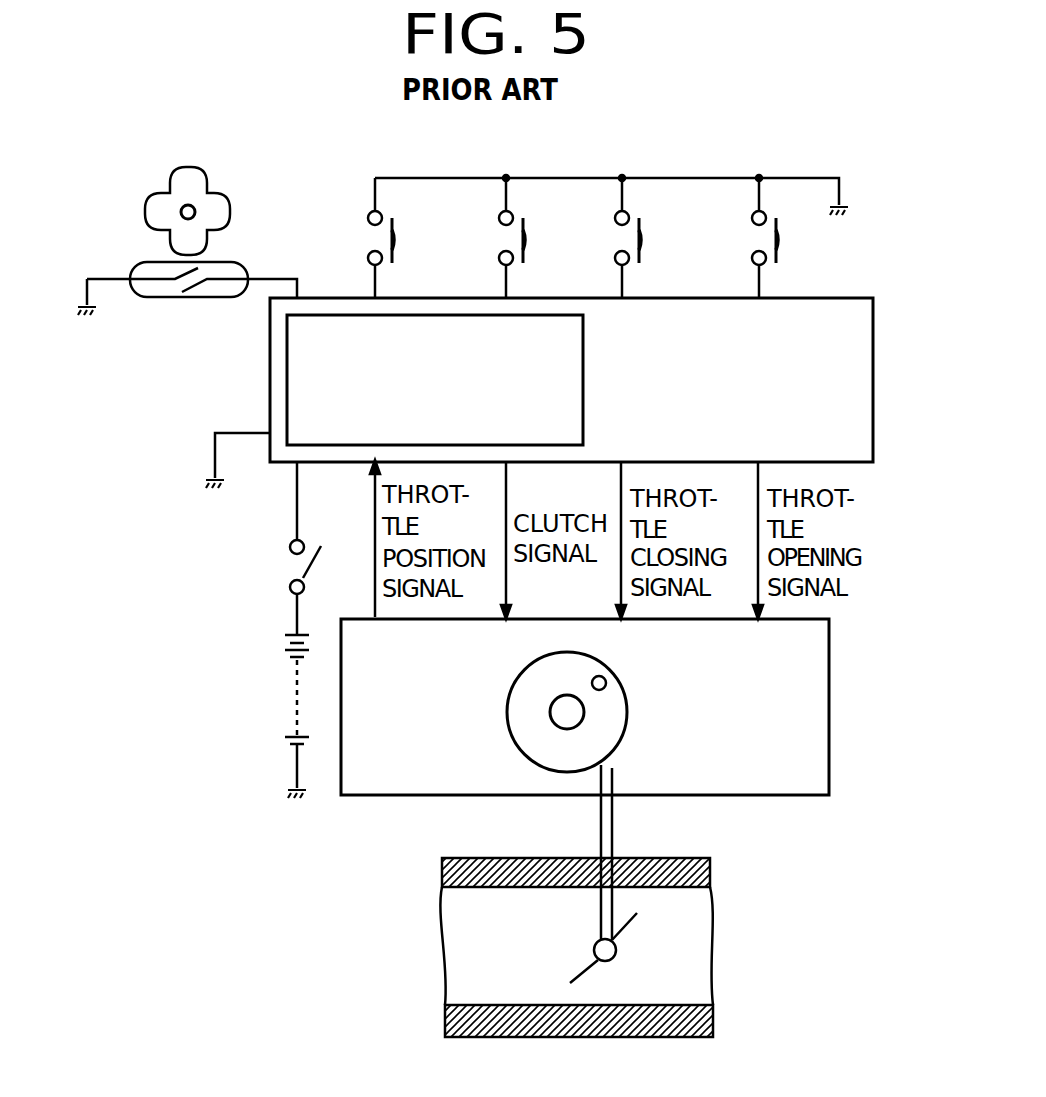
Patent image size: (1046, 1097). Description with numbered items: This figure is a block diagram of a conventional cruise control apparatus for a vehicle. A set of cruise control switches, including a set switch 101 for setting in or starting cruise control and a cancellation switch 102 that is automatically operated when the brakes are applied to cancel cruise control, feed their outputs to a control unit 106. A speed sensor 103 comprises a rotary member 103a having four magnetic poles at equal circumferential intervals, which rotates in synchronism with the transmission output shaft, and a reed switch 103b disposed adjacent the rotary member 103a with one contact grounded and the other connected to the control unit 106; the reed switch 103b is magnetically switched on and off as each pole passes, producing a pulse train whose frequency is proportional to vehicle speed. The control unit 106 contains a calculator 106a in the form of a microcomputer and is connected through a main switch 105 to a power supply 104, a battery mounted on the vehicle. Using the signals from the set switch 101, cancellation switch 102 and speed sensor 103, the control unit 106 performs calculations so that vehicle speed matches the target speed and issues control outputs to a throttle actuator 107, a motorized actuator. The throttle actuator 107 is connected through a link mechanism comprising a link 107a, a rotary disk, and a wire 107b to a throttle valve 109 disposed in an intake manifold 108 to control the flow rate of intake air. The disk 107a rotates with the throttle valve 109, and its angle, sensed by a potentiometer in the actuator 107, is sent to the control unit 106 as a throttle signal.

The set switch 101 is at (780, 227).
The cancellation switch 102 is at (395, 227).
The speed sensor 103 is at (185, 236).
The rotary member 103a is at (206, 191).
The reed switch 103b is at (178, 298).
The power supply 104 is at (287, 644).
The main switch 105 is at (299, 573).
The control unit 106 is at (551, 371).
The calculator 106a is at (287, 376).
The throttle actuator 107 is at (625, 779).
The link 107a is at (627, 717).
The wire 107b is at (613, 822).
The intake manifold 108 is at (463, 945).
The throttle valve 109 is at (627, 930).